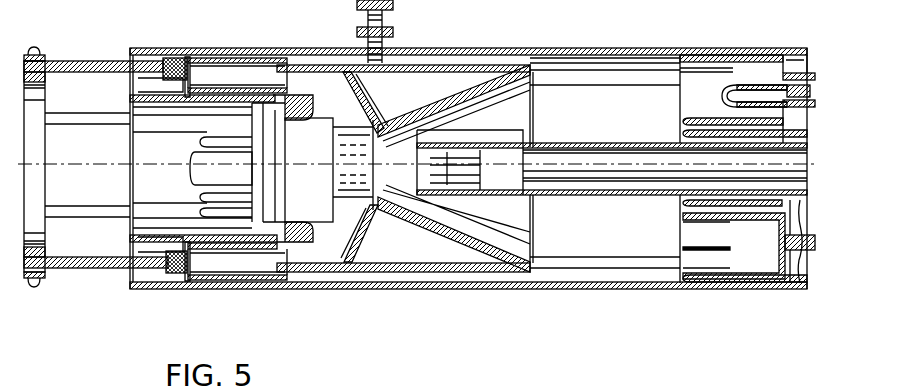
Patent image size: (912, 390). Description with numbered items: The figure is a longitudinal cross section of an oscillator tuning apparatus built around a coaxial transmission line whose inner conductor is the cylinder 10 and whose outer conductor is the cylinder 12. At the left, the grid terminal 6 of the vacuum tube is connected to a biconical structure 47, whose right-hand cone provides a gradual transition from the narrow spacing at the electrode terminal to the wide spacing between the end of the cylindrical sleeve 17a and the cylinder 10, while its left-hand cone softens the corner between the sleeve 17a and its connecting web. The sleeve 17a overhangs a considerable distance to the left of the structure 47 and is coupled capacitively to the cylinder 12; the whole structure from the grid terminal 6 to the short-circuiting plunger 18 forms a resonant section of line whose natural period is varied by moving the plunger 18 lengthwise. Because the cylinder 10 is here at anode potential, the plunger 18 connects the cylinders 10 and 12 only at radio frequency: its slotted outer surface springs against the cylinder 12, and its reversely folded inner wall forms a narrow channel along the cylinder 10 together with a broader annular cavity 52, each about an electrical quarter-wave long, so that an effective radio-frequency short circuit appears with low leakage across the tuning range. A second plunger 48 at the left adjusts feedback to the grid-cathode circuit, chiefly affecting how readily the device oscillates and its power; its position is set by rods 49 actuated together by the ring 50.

The grid terminal 6 is at (373, 158).
The cylinder 10 is at (577, 143).
The cylinder 12 is at (640, 50).
The cylindrical sleeve 17a is at (440, 62).
The short-circuiting plunger 18 is at (780, 225).
The biconical structure 47 is at (363, 96).
The plunger 48 is at (237, 88).
The rods 49 is at (87, 62).
The ring 50 is at (47, 190).
The annular cavity 52 is at (790, 150).